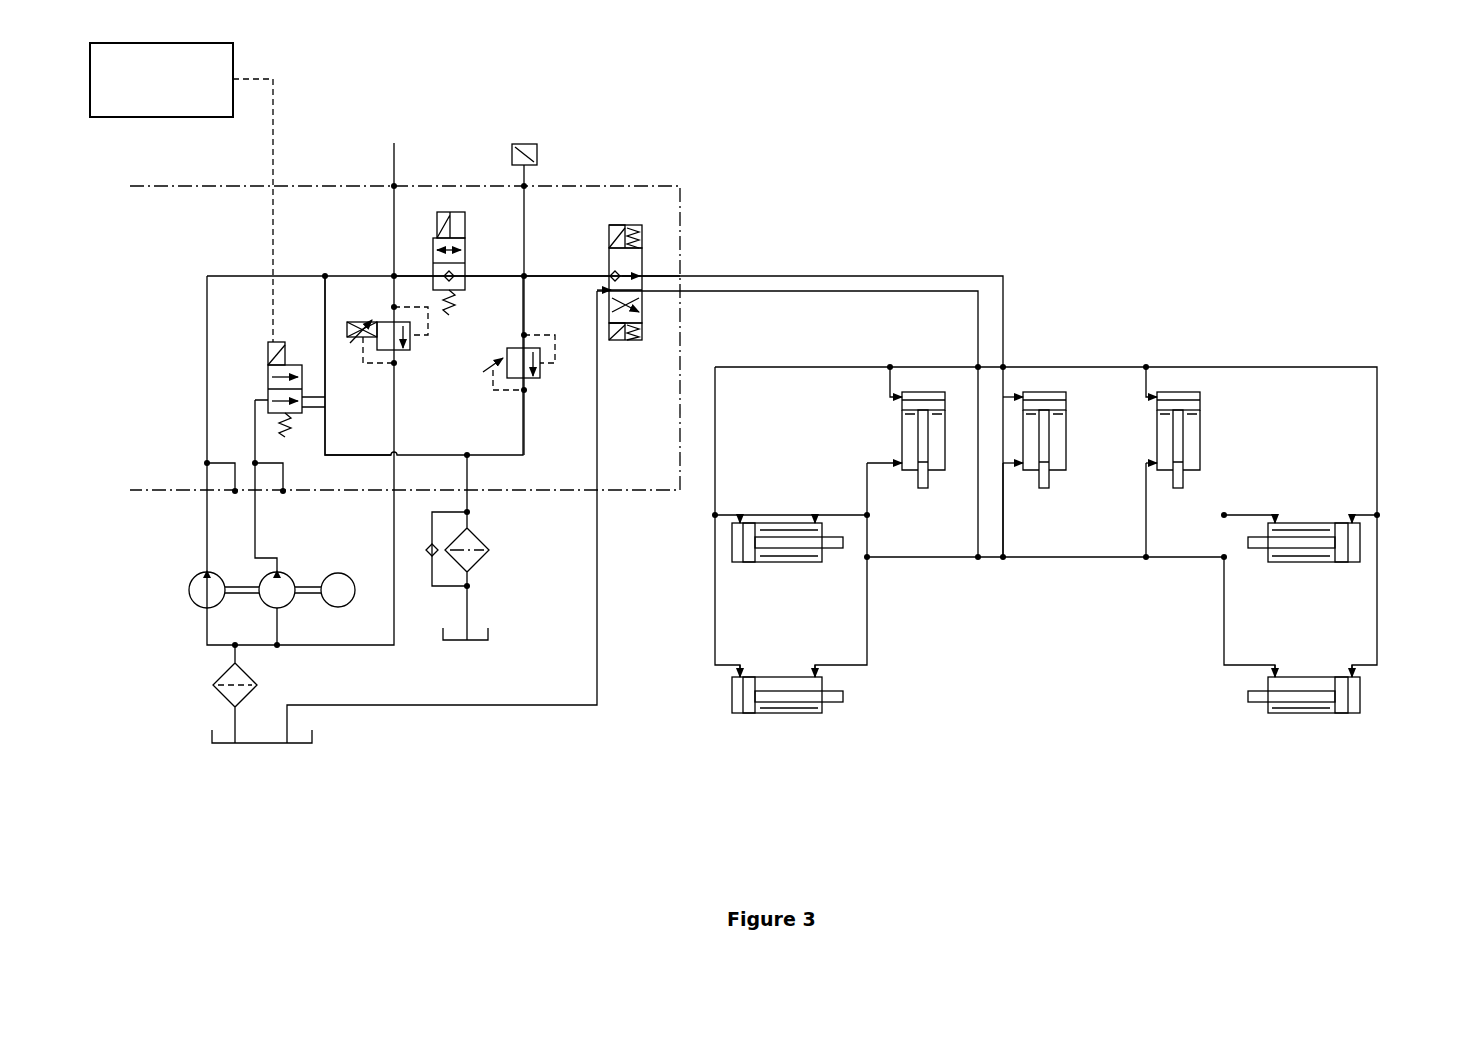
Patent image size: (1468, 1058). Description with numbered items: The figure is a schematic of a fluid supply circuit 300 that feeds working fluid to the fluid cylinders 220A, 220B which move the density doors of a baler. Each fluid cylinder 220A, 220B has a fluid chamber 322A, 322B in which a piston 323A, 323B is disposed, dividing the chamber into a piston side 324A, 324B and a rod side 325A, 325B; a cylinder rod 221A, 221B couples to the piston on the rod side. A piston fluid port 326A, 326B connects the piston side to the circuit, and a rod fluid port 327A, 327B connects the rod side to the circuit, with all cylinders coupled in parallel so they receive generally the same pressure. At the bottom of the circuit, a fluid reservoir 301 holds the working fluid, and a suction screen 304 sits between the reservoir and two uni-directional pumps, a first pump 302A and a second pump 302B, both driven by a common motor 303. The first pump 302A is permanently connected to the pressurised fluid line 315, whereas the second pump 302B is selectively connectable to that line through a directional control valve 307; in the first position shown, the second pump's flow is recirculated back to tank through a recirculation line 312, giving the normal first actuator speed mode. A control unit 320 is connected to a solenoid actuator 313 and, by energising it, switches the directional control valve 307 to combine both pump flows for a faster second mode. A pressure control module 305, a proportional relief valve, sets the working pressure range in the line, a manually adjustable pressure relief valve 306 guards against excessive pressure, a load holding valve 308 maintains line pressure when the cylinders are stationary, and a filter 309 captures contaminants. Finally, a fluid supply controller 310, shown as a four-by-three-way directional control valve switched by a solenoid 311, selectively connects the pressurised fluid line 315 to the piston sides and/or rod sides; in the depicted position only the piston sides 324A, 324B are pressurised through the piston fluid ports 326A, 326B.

The control unit 320 is at (233, 47).
The fluid supply circuit 300 is at (620, 176).
The load holding valve 308 is at (428, 248).
The pressurised fluid line 315 is at (500, 276).
The solenoid 311 is at (612, 230).
The fluid supply controller 310 is at (648, 258).
The directional control valve 307 is at (263, 355).
The solenoid actuator 313 is at (279, 350).
The recirculation line 312 is at (340, 450).
The pressure control module 305 is at (408, 356).
The pressure relief valve 306 is at (542, 380).
The first pump 302A is at (190, 592).
The second pump 302B is at (288, 578).
The motor 303 is at (338, 608).
The fluid reservoir 301 is at (218, 728).
The suction screen 304 is at (258, 685).
The filter 309 is at (488, 556).
The fluid cylinder 220A is at (1047, 421).
The piston fluid port 326A is at (890, 372).
The piston side 324A is at (922, 392).
The piston 323A is at (902, 406).
The fluid chamber 322A is at (902, 428).
The cylinder rod 221A is at (915, 450).
The rod side 325A is at (945, 455).
The rod fluid port 327A is at (905, 470).
The fluid cylinder 220B is at (1031, 610).
The cylinder rod 221B is at (772, 520).
The piston fluid port 326B is at (742, 518).
The rod fluid port 327B is at (815, 520).
The piston side 324B is at (732, 540).
The piston 323B is at (745, 565).
The rod side 325B is at (790, 563).
The fluid chamber 322B is at (790, 565).